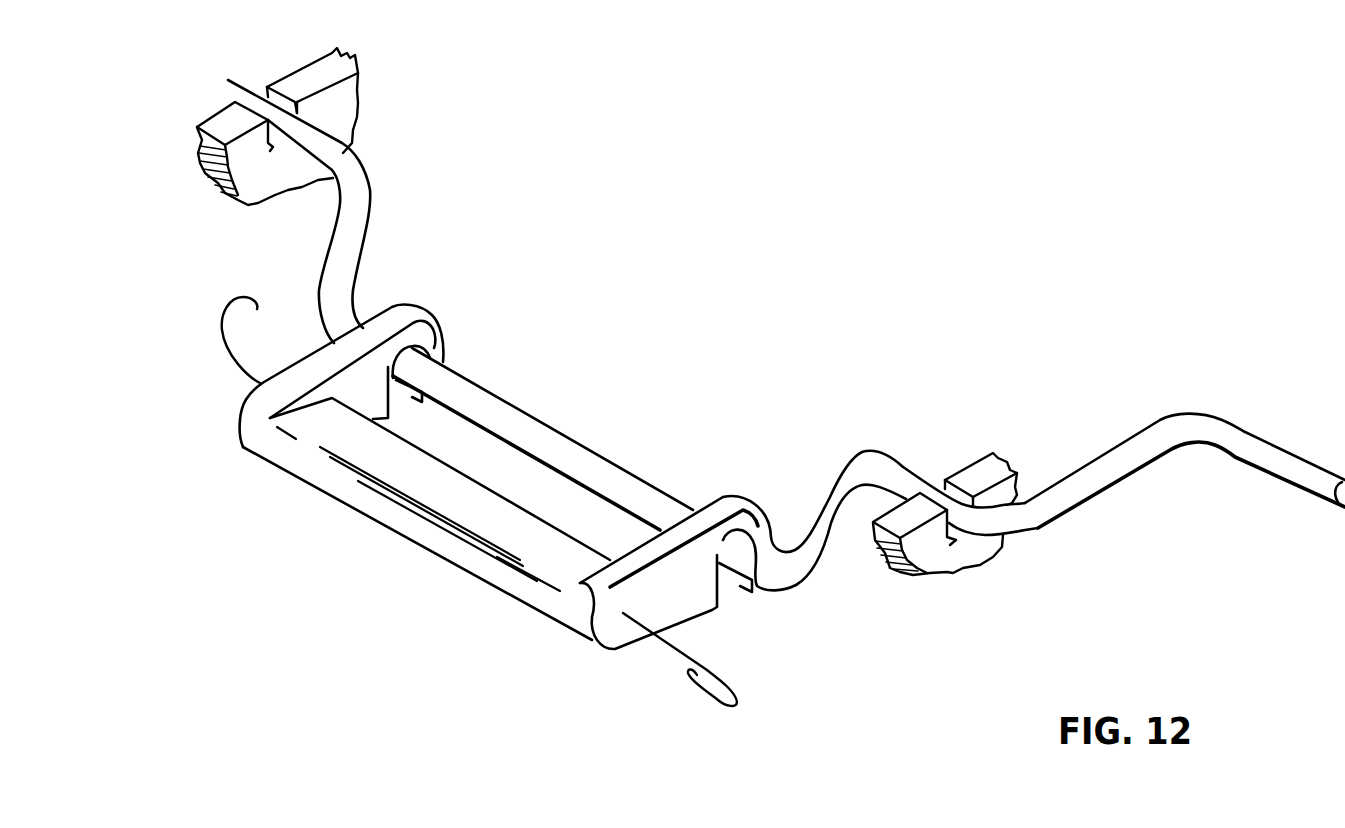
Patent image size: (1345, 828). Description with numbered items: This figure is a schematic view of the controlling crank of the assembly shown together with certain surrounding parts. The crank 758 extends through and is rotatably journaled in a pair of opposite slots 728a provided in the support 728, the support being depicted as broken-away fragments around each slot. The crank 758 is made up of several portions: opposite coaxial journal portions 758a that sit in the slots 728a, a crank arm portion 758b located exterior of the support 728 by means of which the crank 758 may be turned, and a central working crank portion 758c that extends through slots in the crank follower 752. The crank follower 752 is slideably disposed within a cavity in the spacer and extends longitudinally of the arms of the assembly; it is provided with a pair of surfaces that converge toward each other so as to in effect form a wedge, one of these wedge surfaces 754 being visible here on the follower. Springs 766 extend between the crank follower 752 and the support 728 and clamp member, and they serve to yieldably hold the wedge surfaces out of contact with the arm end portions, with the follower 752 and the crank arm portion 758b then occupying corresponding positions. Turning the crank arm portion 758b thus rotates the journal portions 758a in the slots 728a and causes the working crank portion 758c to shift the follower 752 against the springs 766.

The support 728 is at (352, 100).
The slots 728a is at (275, 95).
The crank follower 752 is at (722, 497).
The wedge surface 754 is at (340, 470).
The crank 758 is at (371, 223).
The journal portions 758a is at (887, 456).
The crank arm portion 758b is at (1300, 452).
The working crank portion 758c is at (556, 428).
The springs 766 is at (235, 292).